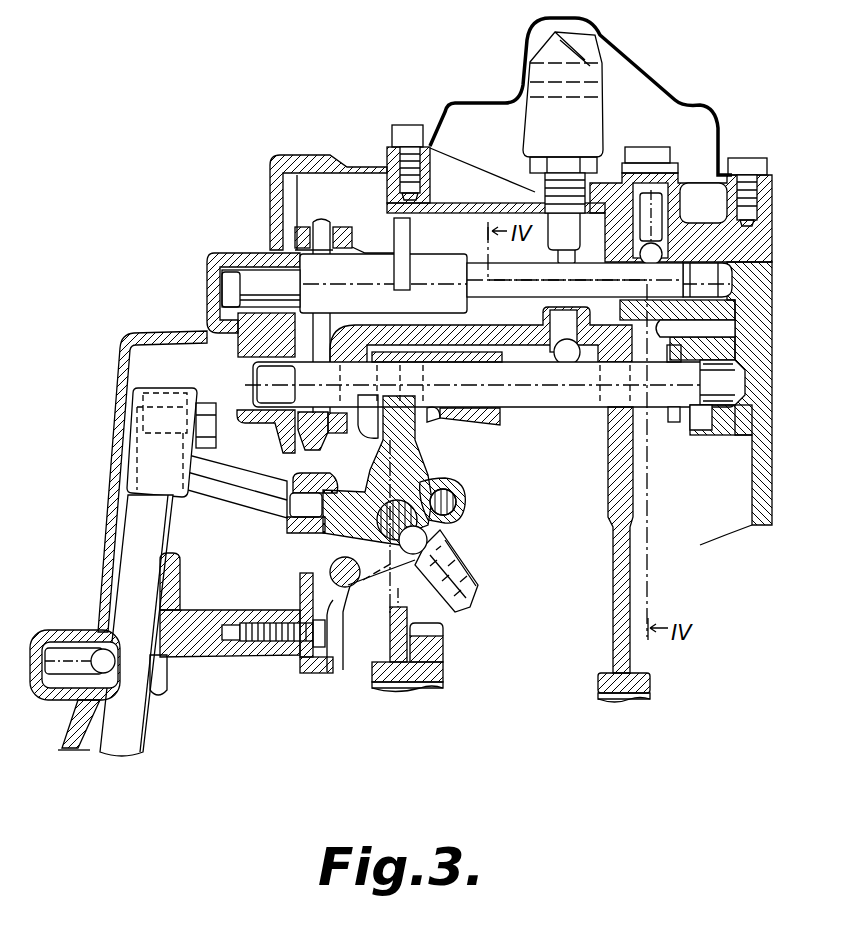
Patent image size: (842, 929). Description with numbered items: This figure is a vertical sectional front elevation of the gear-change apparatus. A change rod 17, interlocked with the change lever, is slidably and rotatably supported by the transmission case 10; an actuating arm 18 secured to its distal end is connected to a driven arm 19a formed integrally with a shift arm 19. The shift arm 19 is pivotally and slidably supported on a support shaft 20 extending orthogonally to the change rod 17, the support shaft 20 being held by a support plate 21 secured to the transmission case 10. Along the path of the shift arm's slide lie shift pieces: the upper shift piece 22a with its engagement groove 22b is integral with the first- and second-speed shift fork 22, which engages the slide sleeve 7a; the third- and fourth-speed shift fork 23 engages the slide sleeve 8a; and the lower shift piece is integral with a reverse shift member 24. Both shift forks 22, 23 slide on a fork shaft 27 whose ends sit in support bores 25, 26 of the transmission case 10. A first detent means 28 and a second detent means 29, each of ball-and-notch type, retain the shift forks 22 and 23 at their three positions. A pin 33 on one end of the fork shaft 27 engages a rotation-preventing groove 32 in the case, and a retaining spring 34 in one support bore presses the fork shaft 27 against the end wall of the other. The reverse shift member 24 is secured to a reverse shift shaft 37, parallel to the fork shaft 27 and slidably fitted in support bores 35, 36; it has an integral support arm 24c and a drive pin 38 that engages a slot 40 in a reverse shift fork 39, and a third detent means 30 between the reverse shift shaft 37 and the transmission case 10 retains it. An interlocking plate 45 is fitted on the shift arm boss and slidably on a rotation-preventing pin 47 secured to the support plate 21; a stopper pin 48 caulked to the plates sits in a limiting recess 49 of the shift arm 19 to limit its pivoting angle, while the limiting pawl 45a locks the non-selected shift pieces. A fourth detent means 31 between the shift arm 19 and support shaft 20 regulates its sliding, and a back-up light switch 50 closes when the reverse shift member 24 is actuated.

The slide sleeve 7a is at (443, 672).
The slide sleeve 8a is at (604, 686).
The transmission case 10 is at (763, 240).
The change rod 17 is at (146, 615).
The actuating arm 18 is at (214, 500).
The shift arm 19 is at (420, 460).
The driven arm 19a is at (306, 533).
The support shaft 20 is at (447, 490).
The support plate 21 is at (318, 670).
The first- and second-speed shift fork 22 is at (392, 630).
The upper shift piece 22a is at (425, 430).
The engagement groove 22b is at (392, 398).
The third- and fourth-speed shift fork 23 is at (618, 485).
The reverse shift member 24 is at (428, 264).
The support arm 24c is at (394, 240).
The support bore 25 is at (270, 409).
The support bore 26 is at (700, 434).
The fork shaft 27 is at (601, 390).
The first detent means 28 is at (437, 371).
The second detent means 29 is at (568, 366).
The third detent means 30 is at (660, 263).
The fourth detent means 31 is at (430, 557).
The rotation-preventing groove 32 is at (690, 430).
The pin 33 is at (672, 421).
The retaining spring 34 is at (716, 362).
The support bore 35 is at (252, 275).
The support bore 36 is at (703, 263).
The reverse shift shaft 37 is at (575, 280).
The drive pin 38 is at (322, 232).
The reverse shift fork 39 is at (344, 229).
The slot 40 is at (322, 262).
The interlocking plate 45 is at (452, 500).
The limiting pawl 45a is at (392, 440).
The rotation-preventing pin 47 is at (341, 585).
The stopper pin 48 is at (454, 508).
The limiting recess 49 is at (453, 520).
The back-up light switch 50 is at (578, 135).